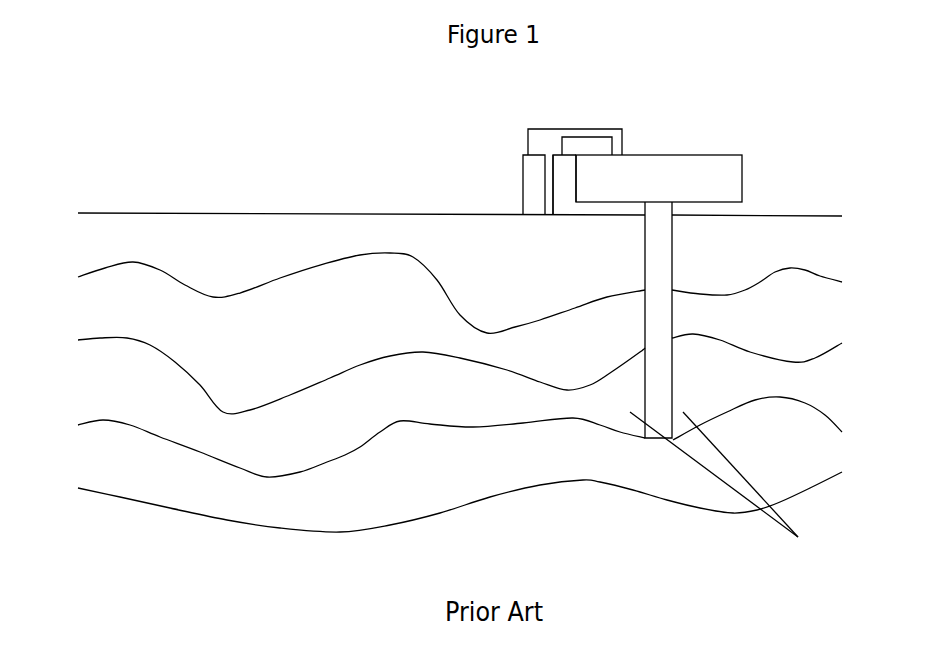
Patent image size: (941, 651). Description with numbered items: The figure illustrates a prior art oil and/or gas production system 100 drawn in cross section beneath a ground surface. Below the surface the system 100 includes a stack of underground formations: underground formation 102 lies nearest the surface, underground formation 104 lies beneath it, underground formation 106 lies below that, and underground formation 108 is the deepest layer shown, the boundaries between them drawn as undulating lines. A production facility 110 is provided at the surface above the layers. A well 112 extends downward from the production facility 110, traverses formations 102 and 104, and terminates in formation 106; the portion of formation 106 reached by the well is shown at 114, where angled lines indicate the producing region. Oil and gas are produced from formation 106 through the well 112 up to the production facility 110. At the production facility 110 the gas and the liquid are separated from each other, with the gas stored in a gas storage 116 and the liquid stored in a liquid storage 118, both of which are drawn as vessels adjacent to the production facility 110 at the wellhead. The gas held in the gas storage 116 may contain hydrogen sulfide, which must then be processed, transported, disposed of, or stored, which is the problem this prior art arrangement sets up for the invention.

The prior art system 100 is at (392, 115).
The underground formation 102 is at (361, 291).
The underground formation 104 is at (460, 341).
The underground formation 106 is at (460, 405).
The underground formation 108 is at (460, 464).
The production facility 110 is at (675, 189).
The well 112 is at (672, 239).
The portion of formation 114 is at (725, 487).
The gas storage 116 is at (561, 173).
The liquid storage 118 is at (537, 172).